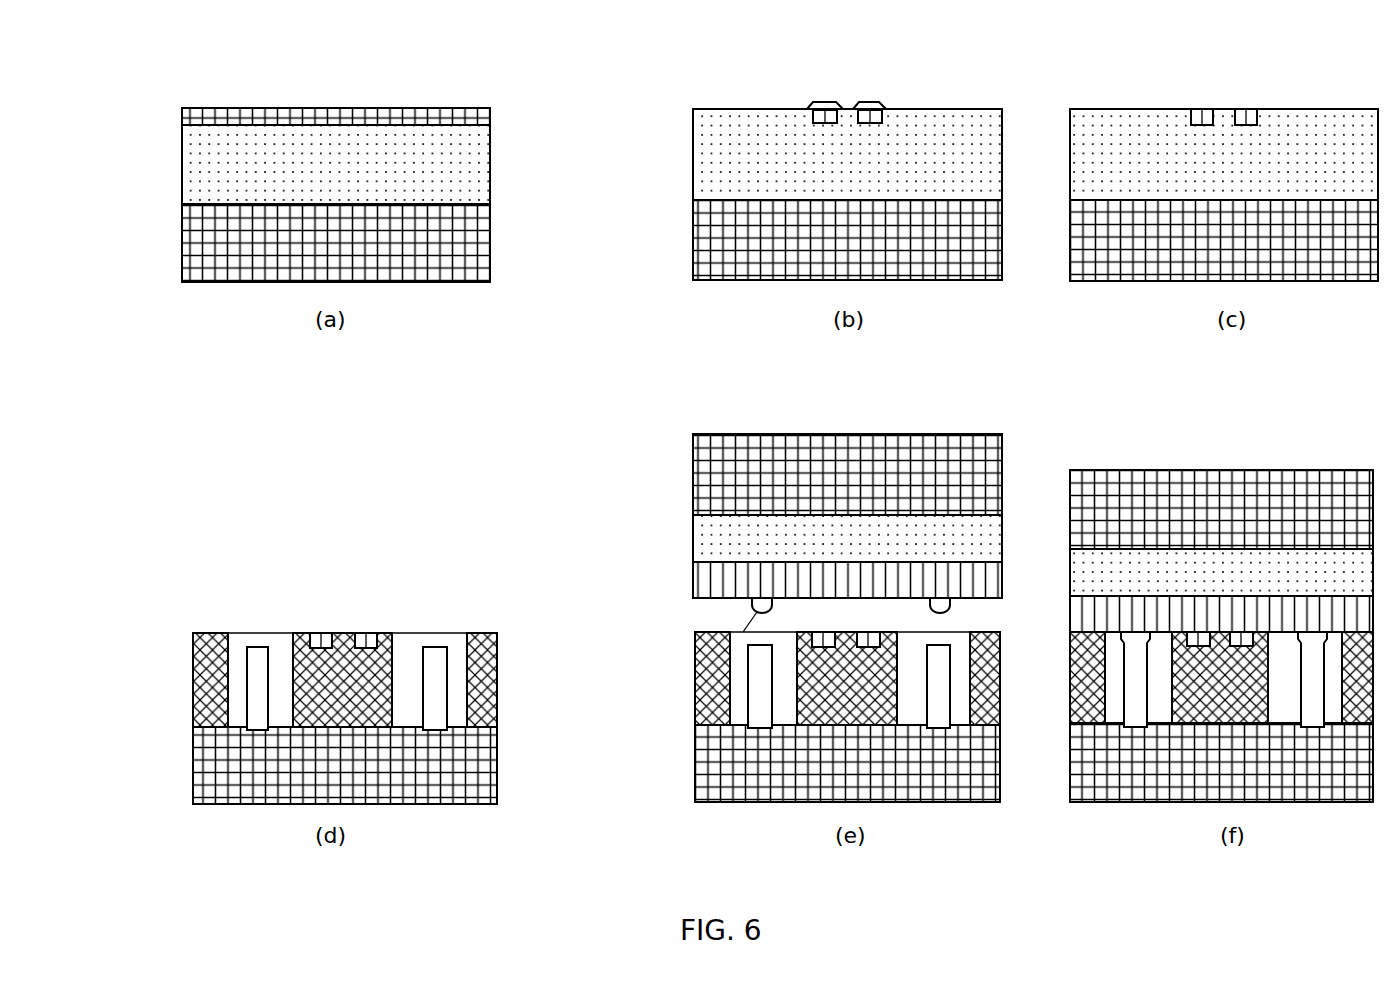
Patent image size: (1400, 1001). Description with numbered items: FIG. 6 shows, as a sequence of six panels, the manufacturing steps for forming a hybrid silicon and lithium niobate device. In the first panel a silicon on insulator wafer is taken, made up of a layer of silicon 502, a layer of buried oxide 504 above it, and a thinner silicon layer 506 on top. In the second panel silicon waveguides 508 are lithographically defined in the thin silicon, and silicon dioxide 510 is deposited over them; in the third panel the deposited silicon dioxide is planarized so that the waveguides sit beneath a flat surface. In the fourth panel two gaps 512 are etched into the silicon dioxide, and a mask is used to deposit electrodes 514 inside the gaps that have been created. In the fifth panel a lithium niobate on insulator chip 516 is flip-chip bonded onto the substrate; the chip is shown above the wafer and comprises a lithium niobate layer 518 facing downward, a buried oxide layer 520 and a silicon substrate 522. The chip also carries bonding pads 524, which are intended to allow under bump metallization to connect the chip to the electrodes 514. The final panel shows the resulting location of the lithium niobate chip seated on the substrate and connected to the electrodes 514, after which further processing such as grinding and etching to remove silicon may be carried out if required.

The layer of silicon 502 is at (197, 243).
The layer of buried oxide 504 is at (197, 167).
The thinner silicon layer 506 is at (312, 116).
The silicon waveguides 508 is at (866, 108).
The silicon dioxide 510 is at (868, 104).
The gaps 512 is at (237, 692).
The electrodes 514 is at (258, 655).
The lithium niobate on insulator chip 516 is at (757, 499).
The lithium niobate layer 518 is at (740, 580).
The buried oxide layer 520 is at (738, 536).
The silicon substrate 522 is at (837, 450).
The bonding pads 524 is at (697, 727).